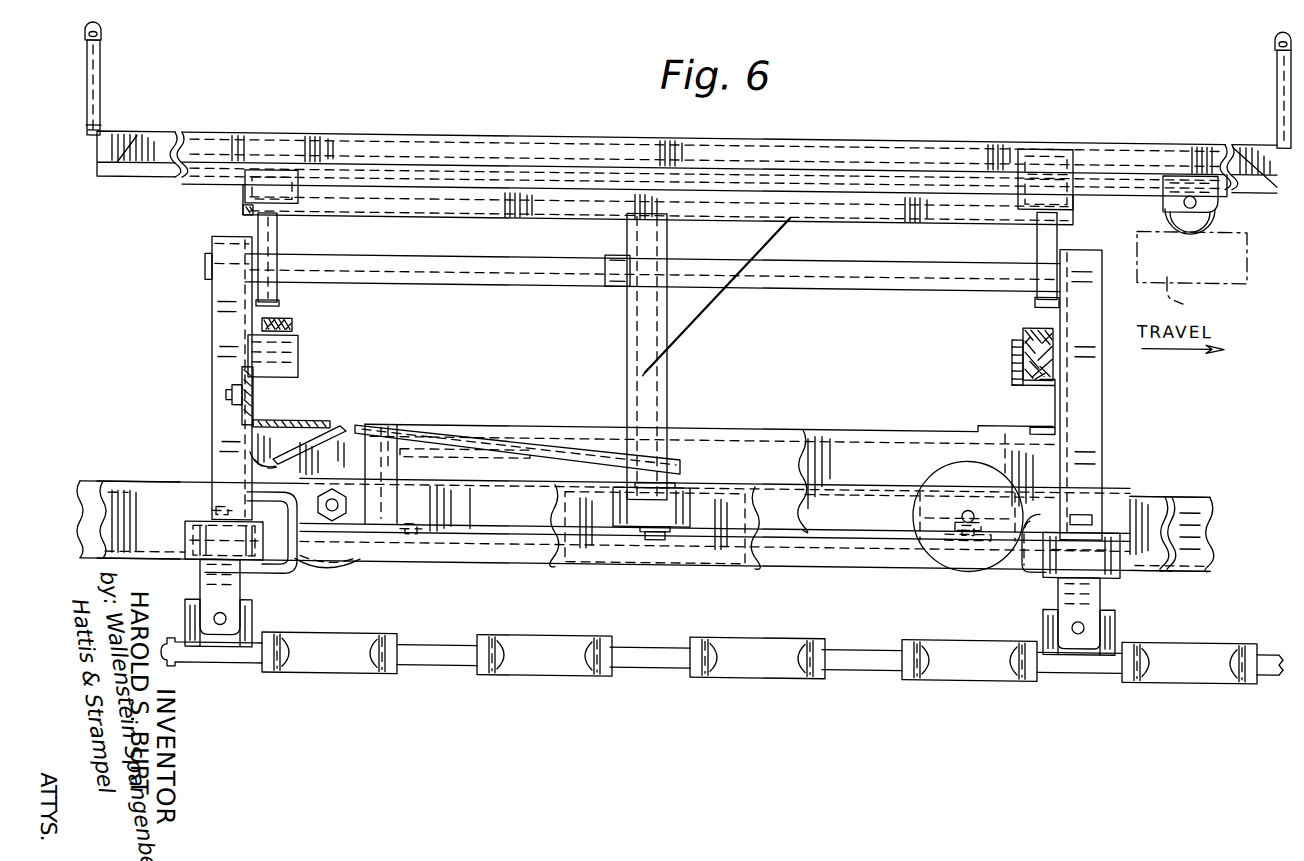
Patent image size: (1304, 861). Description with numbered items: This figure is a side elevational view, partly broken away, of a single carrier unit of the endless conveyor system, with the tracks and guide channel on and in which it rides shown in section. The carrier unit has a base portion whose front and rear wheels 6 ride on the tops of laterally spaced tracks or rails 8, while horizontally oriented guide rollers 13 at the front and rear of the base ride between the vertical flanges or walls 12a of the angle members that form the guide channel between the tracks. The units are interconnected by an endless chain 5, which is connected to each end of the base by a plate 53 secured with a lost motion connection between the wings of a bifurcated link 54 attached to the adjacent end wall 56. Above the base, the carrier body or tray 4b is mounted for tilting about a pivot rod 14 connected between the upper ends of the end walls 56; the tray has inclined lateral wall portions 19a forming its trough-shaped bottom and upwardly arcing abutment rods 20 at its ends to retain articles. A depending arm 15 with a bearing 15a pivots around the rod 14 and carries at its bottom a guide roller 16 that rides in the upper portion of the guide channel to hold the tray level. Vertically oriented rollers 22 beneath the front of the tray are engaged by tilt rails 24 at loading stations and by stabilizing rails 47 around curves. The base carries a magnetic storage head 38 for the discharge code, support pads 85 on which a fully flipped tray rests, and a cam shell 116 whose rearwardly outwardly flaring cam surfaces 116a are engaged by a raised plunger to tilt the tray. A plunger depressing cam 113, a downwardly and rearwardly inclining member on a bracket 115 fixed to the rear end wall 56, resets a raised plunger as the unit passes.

The abutment rod 20 is at (100, 67).
The inclined lateral wall portion 19a is at (850, 129).
The carrier body or tray 4b is at (946, 130).
The pivot rod 14 is at (491, 253).
The bearing 15a is at (612, 244).
The depending arm 15 is at (654, 371).
The end wall 56 is at (210, 334).
The support pad 85 is at (280, 316).
The bracket 115 is at (300, 416).
The plunger depressing cam 113 is at (276, 455).
The cam shell 116 is at (440, 433).
The cam surface 116a is at (428, 434).
The vertical flange or wall 12a is at (134, 480).
The track or rail 8 is at (90, 481).
The magnetic storage head 38 is at (346, 554).
The wheel 6 is at (334, 563).
The guide roller or wheel 16 is at (686, 493).
The guide roller 13 is at (184, 537).
The bifurcated link 54 is at (200, 586).
The plate 53 is at (188, 622).
The roller 22 is at (1214, 188).
The tilt rail 24 is at (1213, 276).
The rail 47 is at (1192, 275).
The endless chain 5 is at (361, 685).